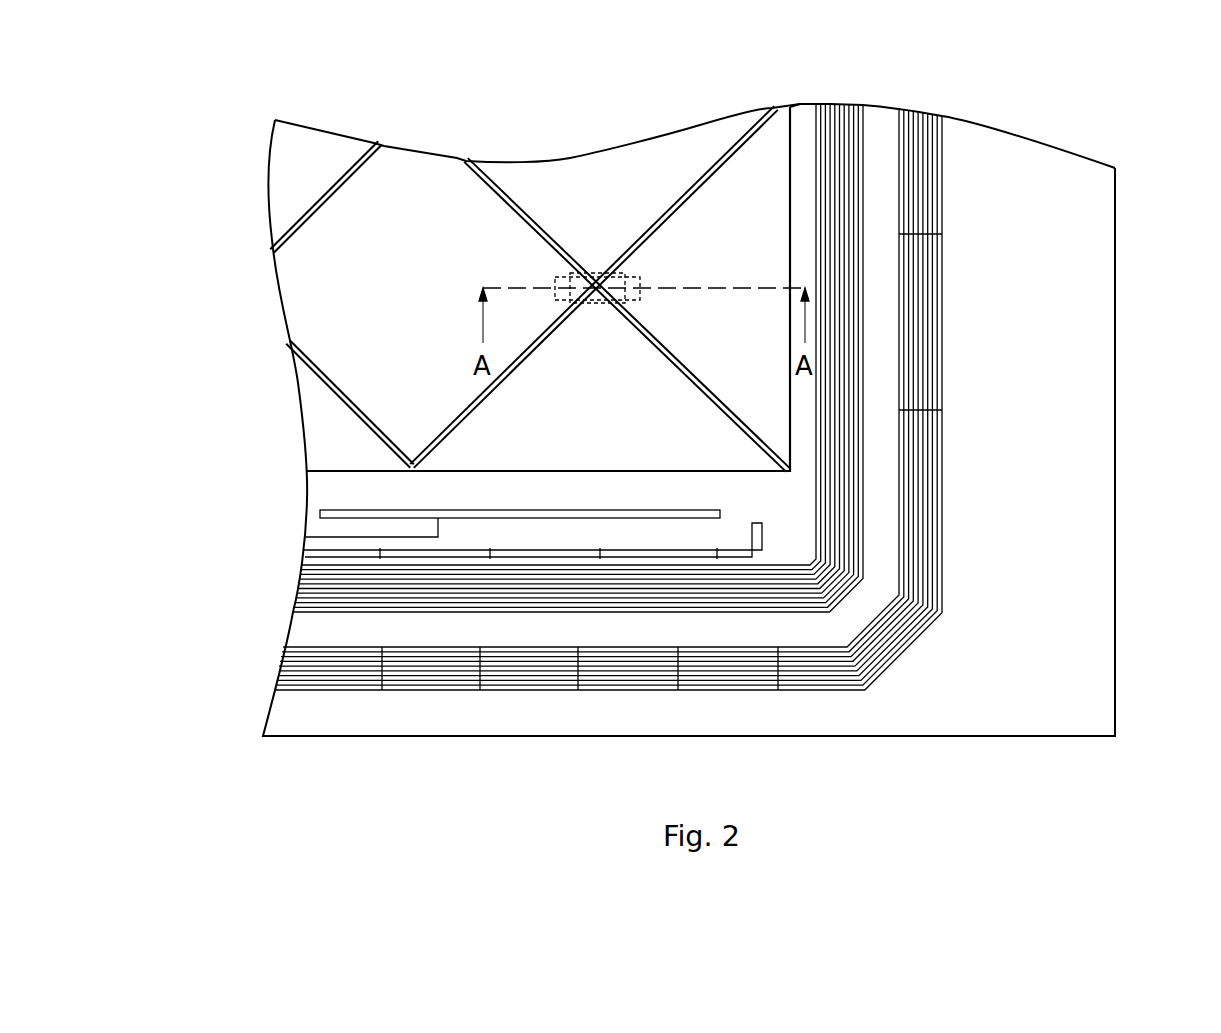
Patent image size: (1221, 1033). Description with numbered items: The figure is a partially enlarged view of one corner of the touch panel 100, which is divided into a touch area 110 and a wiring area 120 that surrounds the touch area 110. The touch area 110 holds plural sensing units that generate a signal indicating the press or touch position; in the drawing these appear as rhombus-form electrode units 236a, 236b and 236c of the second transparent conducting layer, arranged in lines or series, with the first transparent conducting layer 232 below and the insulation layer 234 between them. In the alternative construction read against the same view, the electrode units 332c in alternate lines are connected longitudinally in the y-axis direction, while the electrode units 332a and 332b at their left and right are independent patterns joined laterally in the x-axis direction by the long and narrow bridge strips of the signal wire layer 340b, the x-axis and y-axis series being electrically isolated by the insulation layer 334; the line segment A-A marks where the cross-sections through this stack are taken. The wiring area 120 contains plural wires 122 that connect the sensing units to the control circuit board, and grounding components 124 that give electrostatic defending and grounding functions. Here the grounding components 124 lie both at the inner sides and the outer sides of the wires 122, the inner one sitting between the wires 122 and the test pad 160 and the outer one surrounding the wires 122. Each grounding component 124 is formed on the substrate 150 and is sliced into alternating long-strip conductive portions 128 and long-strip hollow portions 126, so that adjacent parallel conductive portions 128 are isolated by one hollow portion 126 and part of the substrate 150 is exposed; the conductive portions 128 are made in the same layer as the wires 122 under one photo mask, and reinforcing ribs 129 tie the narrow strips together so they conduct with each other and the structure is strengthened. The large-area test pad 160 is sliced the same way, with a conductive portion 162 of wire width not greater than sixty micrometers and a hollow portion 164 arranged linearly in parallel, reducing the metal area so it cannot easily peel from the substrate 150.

The touch panel 100 is at (188, 110).
The touch area 110 is at (800, 105).
The wiring area 120 is at (1117, 385).
The wires 122 is at (848, 140).
The grounding component 124 is at (349, 547).
The hollow portion 126 is at (446, 692).
The conductive portion 128 is at (318, 692).
The reinforcing rib 129 is at (383, 692).
The substrate 150 is at (1067, 285).
The test pad 160 is at (192, 437).
The conductive portion 162 is at (320, 516).
The hollow portion 164 is at (345, 509).
The first transparent conducting layer 232 is at (585, 302).
The insulation layer 234 is at (575, 277).
The electrode unit 236a is at (415, 172).
The electrode unit 236b is at (700, 215).
The electrode unit 236c is at (580, 176).
The electrode unit 332a is at (326, 197).
The electrode unit 332b is at (594, 287).
The electrode unit 332c is at (538, 315).
The insulation layer 334 is at (597, 288).
The signal wire layer 340b is at (597, 288).